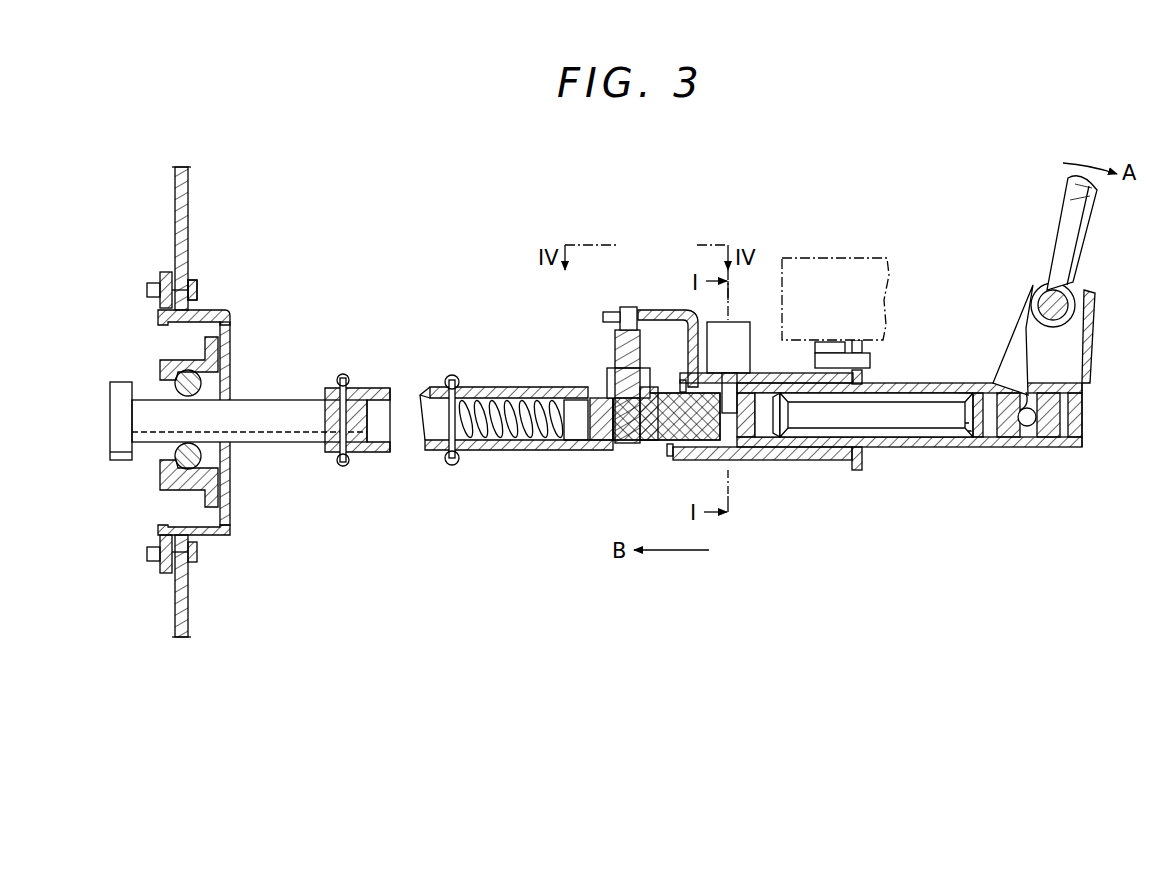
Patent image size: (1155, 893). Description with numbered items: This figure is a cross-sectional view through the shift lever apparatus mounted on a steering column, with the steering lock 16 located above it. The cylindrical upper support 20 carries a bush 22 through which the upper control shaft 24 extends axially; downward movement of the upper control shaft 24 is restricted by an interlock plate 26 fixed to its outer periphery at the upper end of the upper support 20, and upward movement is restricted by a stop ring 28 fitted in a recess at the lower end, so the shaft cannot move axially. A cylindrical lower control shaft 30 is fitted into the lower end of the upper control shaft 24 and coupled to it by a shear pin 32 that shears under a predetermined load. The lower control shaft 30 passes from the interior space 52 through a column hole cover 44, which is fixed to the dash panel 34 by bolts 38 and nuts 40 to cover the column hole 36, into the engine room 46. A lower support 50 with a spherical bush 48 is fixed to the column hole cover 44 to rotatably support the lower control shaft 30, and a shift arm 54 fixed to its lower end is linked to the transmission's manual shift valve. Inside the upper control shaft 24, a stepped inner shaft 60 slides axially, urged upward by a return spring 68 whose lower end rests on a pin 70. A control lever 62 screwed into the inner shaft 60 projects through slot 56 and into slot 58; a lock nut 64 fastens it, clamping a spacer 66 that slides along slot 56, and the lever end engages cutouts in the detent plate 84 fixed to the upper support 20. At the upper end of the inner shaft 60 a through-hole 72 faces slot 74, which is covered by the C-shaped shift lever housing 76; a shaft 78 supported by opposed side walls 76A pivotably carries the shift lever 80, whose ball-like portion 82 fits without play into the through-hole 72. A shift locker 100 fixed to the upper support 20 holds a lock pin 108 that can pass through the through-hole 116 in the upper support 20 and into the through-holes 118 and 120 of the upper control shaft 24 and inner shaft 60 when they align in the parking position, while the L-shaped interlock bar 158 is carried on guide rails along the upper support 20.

The steering lock 16 is at (856, 258).
The upper support 20 is at (810, 450).
The bush 22 is at (683, 462).
The upper control shaft 24 is at (498, 390).
The interlock plate 26 is at (862, 378).
The stop ring 28 is at (667, 452).
The lower control shaft 30 is at (270, 400).
The shear pin 32 is at (343, 462).
The dash panel 34 is at (175, 215).
The column hole 36 is at (180, 322).
The bolts 38 is at (197, 290).
The nuts 40 is at (160, 285).
The column hole cover 44 is at (230, 336).
The engine room 46 is at (93, 264).
The spherical bush 48 is at (160, 364).
The lower support 50 is at (160, 478).
The interior space 52 is at (275, 240).
The shift arm 54 is at (110, 432).
The slot 56 is at (598, 385).
The slot 58 is at (602, 452).
The inner shaft 60 is at (945, 420).
The control lever 62 is at (620, 340).
The lock nut 64 is at (652, 392).
The spacer 66 is at (610, 375).
The return spring 68 is at (498, 452).
The pin 70 is at (455, 378).
The through-hole 72 is at (1022, 430).
The slot 74 is at (1005, 383).
The shift lever housing 76 is at (1088, 375).
The side walls 76A is at (1031, 290).
The shaft 78 is at (1070, 290).
The shift lever 80 is at (1062, 218).
The ball-like portion 82 is at (1045, 445).
The detent plate 84 is at (670, 312).
The shift locker 100 is at (745, 322).
The lock pin 108 is at (742, 445).
The through-hole 116 is at (737, 373).
The through-hole 118 is at (736, 445).
The through-hole 120 is at (728, 445).
The interlock bar 158 is at (870, 360).